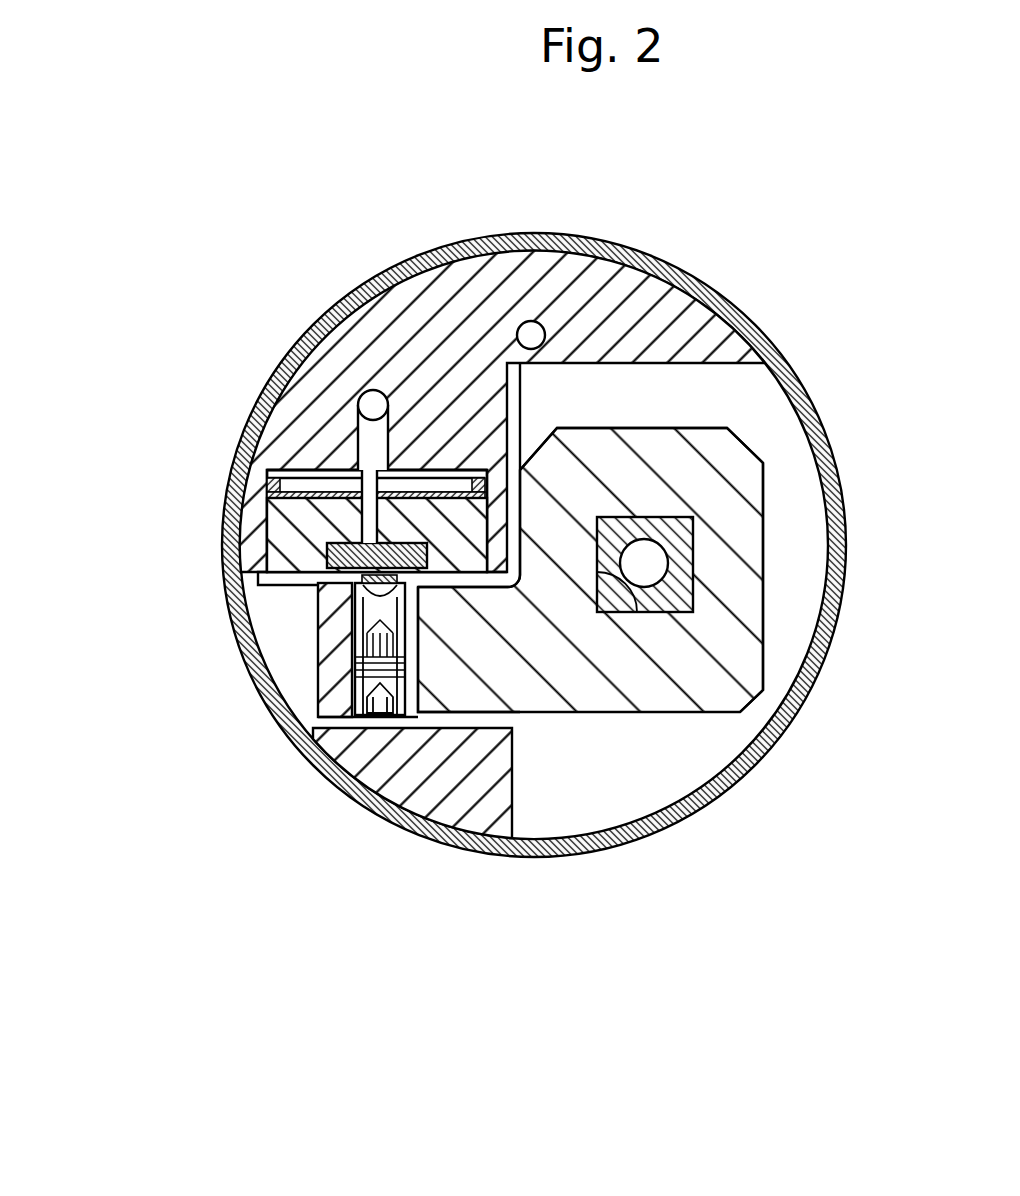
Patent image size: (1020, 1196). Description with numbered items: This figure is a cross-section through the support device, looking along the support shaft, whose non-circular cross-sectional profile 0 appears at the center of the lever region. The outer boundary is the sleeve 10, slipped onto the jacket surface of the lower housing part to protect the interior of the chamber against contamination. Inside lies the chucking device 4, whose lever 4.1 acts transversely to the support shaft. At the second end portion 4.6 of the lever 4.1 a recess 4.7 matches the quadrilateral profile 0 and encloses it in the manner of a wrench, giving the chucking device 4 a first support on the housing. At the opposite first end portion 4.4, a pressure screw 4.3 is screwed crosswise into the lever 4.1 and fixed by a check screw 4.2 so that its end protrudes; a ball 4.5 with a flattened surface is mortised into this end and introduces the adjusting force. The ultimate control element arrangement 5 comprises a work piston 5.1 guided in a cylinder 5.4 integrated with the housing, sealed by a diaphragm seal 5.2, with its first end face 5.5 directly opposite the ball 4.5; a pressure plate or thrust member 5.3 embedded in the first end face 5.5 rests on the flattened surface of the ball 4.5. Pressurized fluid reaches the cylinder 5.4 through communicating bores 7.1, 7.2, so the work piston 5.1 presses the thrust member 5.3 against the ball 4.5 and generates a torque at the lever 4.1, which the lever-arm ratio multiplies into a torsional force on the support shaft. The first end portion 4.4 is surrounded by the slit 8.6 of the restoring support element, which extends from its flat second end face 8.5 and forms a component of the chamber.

The axis of rotation 0 is at (693, 534).
The chucking device 4 is at (548, 957).
The lever 4.1 is at (575, 737).
The check screw 4.2 is at (417, 687).
The pressure screw 4.3 is at (320, 780).
The first end portion 4.4 is at (318, 583).
The ball 4.5 is at (258, 578).
The second end portion 4.6 is at (740, 477).
The recess 4.7 is at (612, 605).
The ultimate control element arrangement 5 is at (88, 380).
The work piston 5.1 is at (295, 524).
The diaphragm seal 5.2 is at (335, 482).
The pressure plate or thrust member 5.3 is at (350, 470).
The cylinder 5.4 is at (325, 494).
The first end face 5.5 is at (300, 577).
The communicating bore 7.1 is at (377, 392).
The communicating bore 7.2 is at (372, 440).
The second end face 8.5 is at (340, 580).
The slit 8.6 is at (298, 693).
The sleeve 10 is at (702, 283).